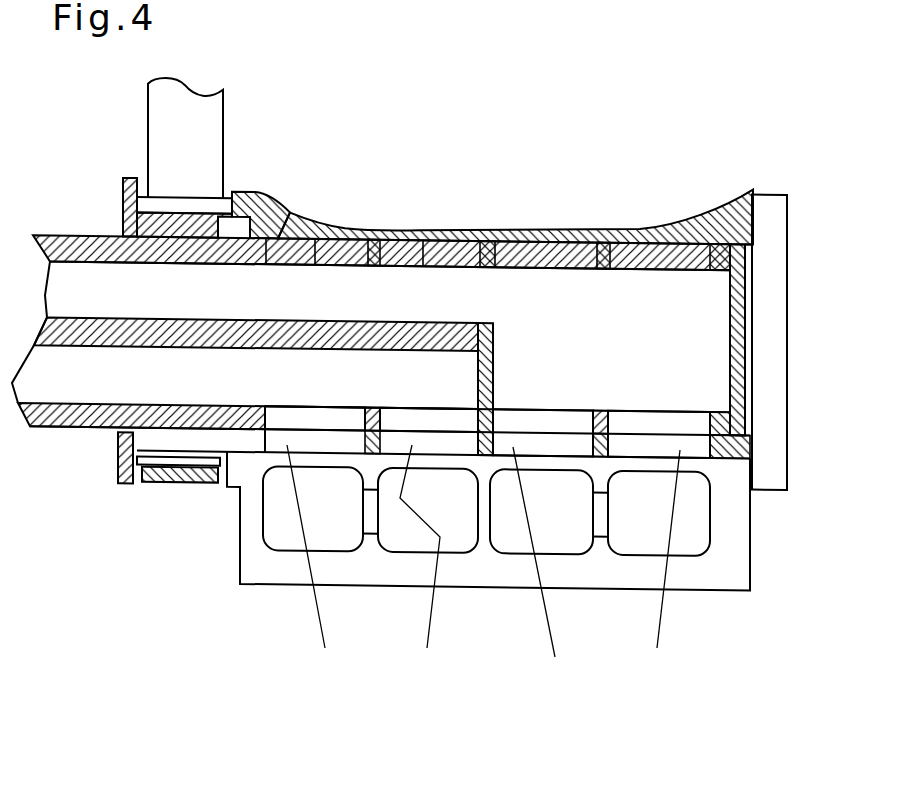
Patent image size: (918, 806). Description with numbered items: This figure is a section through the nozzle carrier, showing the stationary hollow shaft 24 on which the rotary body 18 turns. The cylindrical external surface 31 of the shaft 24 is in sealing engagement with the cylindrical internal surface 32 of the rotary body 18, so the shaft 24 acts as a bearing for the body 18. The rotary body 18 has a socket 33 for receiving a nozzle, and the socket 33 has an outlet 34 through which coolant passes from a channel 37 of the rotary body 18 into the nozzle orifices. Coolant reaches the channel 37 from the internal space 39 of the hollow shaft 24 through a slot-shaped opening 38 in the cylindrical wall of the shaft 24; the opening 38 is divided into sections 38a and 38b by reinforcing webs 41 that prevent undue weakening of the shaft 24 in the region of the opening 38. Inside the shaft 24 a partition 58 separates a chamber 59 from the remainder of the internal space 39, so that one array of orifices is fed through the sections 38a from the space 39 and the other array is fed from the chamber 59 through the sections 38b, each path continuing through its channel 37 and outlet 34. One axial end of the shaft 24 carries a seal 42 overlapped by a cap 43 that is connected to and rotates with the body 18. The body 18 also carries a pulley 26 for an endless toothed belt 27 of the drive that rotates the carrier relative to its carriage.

The rotary body 18 is at (522, 232).
The hollow shaft 24 is at (252, 232).
The pulley 26 is at (128, 487).
The endless toothed belt 27 is at (172, 485).
The cylindrical external surface 31 is at (447, 232).
The cylindrical internal surface 32 is at (428, 268).
The socket 33 is at (245, 577).
The outlet 34 is at (283, 545).
The channel 37 is at (427, 648).
The opening 38 is at (397, 405).
The section of the opening 38a is at (644, 427).
The section of the opening 38b is at (302, 418).
The internal space 39 is at (693, 298).
The reinforcing web 41 is at (365, 457).
The seal 42 is at (733, 203).
The cap 43 is at (770, 213).
The partition 58 is at (355, 340).
The chamber 59 is at (288, 375).